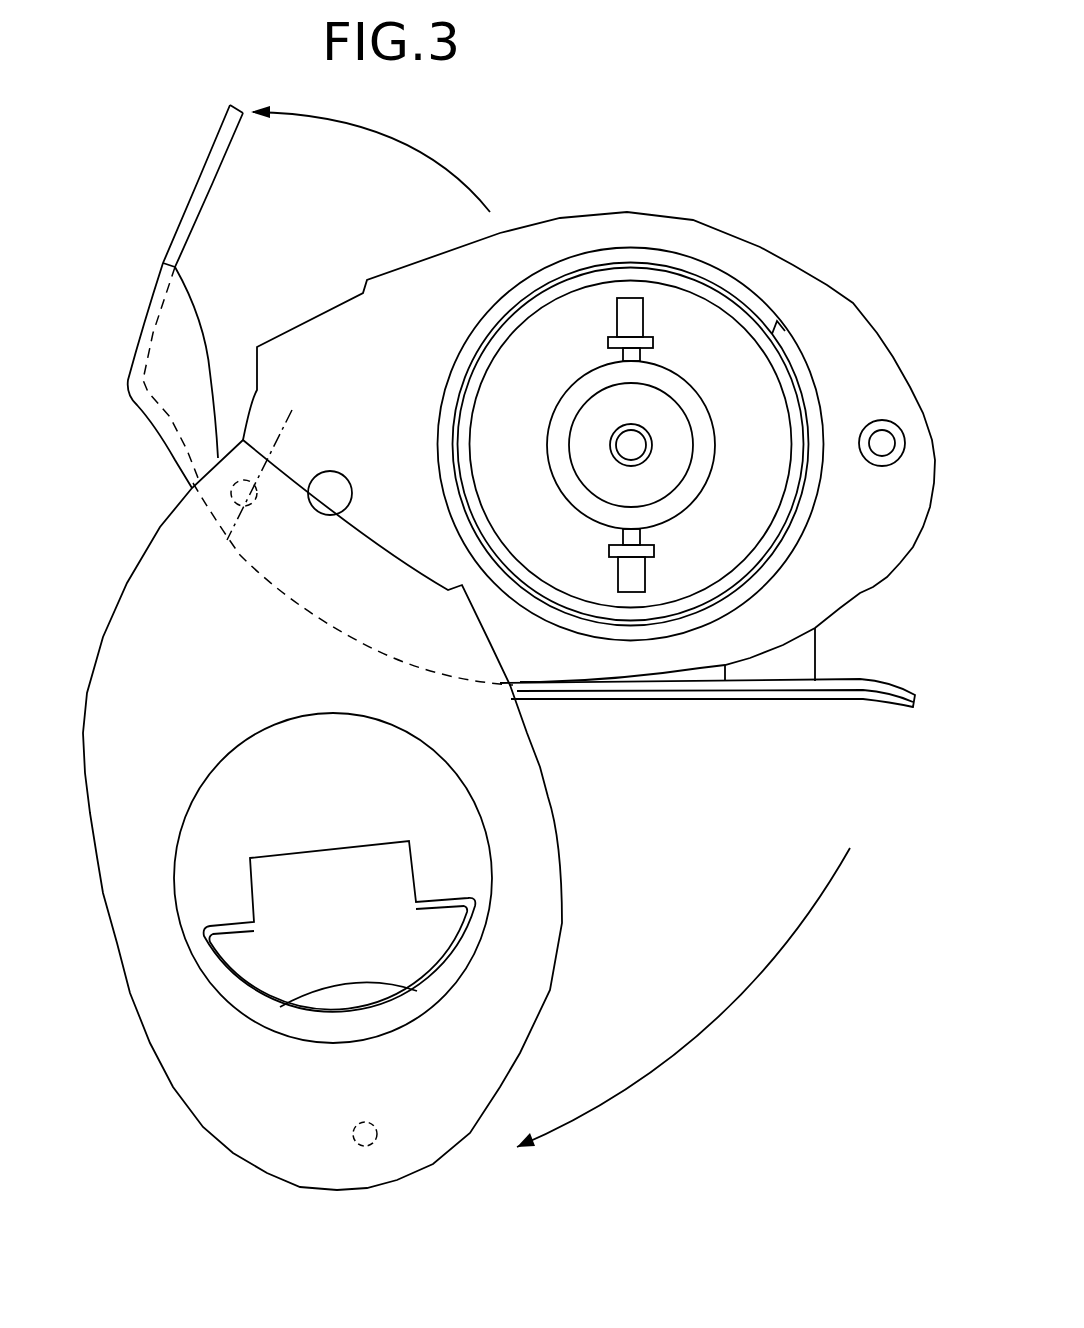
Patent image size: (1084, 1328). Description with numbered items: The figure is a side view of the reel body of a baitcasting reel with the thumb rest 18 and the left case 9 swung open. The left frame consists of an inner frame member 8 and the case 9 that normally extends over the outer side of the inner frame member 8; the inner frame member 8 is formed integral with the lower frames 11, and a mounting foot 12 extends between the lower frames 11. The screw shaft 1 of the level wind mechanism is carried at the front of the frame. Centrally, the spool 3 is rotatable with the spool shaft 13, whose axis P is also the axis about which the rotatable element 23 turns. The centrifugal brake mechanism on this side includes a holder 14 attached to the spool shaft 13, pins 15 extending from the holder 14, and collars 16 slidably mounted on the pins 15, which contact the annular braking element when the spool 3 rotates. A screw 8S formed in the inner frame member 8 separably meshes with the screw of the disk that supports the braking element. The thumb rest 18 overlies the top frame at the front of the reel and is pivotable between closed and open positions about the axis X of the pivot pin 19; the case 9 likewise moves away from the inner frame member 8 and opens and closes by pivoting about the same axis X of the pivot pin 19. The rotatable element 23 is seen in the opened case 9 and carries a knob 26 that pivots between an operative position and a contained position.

The screw shaft 1 is at (337, 495).
The spool 3 is at (483, 437).
The inner frame member 8 is at (873, 565).
The screw 8S is at (778, 322).
The case 9 is at (540, 980).
The lower frame 11 is at (800, 658).
The mounting foot 12 is at (682, 697).
The spool shaft 13 is at (623, 435).
The holder 14 is at (568, 475).
The pin 15 is at (637, 355).
The collar 16 is at (643, 318).
The thumb rest 18 is at (203, 178).
The pivot pin 19 is at (227, 540).
The rotatable element 23 is at (233, 765).
The knob 26 is at (266, 975).
The axis P is at (633, 445).
The axis X is at (266, 458).